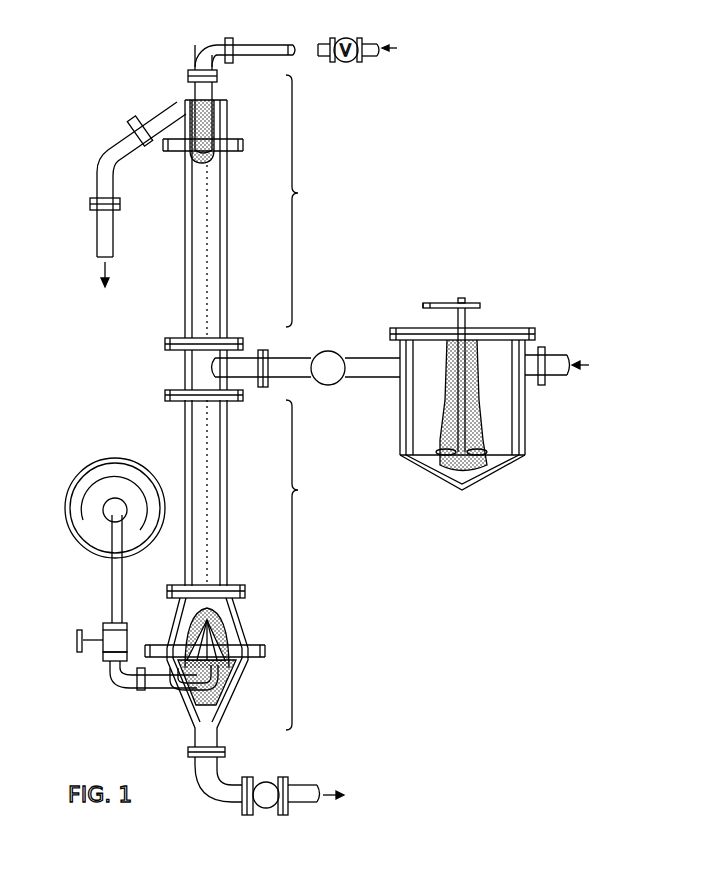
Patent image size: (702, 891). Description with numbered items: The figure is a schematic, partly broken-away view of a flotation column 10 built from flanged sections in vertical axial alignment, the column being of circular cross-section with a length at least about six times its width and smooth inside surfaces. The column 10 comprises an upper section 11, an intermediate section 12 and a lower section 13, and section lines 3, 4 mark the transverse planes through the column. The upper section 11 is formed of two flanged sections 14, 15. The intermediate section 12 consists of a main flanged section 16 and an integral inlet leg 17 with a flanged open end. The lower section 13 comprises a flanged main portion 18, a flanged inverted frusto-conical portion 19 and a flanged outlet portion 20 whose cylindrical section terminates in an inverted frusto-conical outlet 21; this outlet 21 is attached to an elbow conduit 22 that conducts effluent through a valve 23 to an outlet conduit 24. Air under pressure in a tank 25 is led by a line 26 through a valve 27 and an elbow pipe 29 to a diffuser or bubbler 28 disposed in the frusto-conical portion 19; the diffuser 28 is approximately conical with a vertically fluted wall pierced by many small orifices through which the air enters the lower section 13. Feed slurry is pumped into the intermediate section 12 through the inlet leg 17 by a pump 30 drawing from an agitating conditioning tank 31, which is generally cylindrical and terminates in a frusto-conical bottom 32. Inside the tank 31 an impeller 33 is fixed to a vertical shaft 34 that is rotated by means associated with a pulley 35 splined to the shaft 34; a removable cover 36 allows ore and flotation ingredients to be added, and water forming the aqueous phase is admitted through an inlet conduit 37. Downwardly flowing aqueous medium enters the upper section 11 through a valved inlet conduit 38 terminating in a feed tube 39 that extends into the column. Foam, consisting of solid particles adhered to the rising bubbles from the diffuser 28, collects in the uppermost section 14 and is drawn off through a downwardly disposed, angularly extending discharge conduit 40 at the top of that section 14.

The section line 3- 3 is at (105, 116).
The section line 4- 4 is at (152, 640).
The flotation column 10 is at (183, 252).
The upper section 11 is at (306, 201).
The intermediate section 12 is at (160, 350).
The lower section 13 is at (307, 565).
The section 14 is at (222, 100).
The section 15 is at (222, 205).
The main flanged section 16 is at (244, 354).
The inlet leg 17 is at (277, 358).
The flanged main portion 18 is at (218, 490).
The flanged inverted frusto-conical portion 19 is at (234, 608).
The flanged outlet portion 20 is at (247, 678).
The inverted frusto-conical outlet 21 is at (225, 717).
The elbow conduit 22 is at (220, 794).
The valve 23 is at (268, 808).
The outlet conduit 24 is at (300, 803).
The tank 25 is at (102, 464).
The line 26 is at (112, 585).
The valve 27 is at (108, 633).
The diffuser or bubbler 28 is at (178, 634).
The elbow pipe 29 is at (143, 690).
The pump 30 is at (336, 354).
The agitating conditioning tank 31 is at (553, 426).
The frusto-conical bottom 32 is at (510, 460).
The impeller 33 is at (470, 470).
The vertical shaft 34 is at (468, 320).
The pulley 35 is at (468, 303).
The removable cover 36 is at (528, 329).
The inlet conduit 37 is at (555, 358).
The valved inlet conduit 38 is at (253, 45).
The feed tube 39 is at (188, 78).
The discharge conduit 40 is at (103, 192).